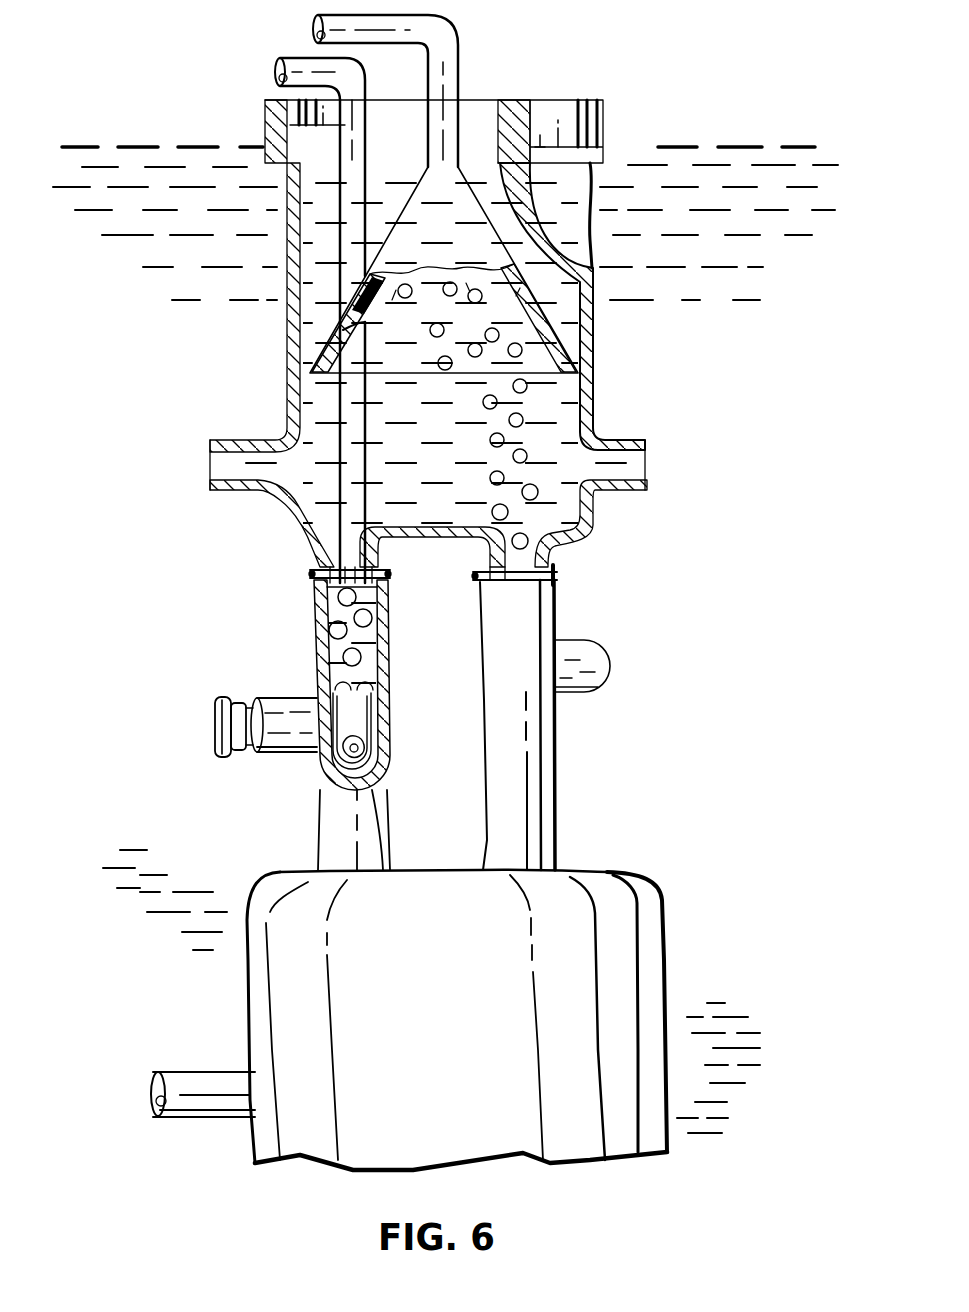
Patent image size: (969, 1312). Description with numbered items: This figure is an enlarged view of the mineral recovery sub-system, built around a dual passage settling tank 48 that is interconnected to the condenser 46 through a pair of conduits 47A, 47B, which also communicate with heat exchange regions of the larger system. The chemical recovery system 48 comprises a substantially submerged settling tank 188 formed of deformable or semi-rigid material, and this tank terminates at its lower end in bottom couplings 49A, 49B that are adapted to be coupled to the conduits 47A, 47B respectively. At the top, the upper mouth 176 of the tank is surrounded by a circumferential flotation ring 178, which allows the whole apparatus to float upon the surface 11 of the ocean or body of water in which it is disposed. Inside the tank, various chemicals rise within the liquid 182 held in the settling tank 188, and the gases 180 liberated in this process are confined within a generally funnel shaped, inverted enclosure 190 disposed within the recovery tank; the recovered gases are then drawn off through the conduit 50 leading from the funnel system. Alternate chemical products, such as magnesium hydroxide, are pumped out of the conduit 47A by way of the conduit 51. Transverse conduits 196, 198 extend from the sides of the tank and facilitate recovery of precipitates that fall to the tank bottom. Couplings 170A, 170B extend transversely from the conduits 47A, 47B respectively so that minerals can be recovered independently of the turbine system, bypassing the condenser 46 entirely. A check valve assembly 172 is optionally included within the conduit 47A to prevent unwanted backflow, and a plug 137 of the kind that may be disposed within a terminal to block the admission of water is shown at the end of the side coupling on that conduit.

The surface of the ocean or body of water 11 is at (607, 147).
The condenser 46 is at (665, 886).
The conduit 47A is at (387, 667).
The conduit 47B is at (543, 738).
The dual passage settling tank 48 is at (606, 340).
The lower bottom coupling 49A is at (314, 555).
The lower bottom coupling 49B is at (555, 553).
The conduit 50 is at (447, 43).
The conduit 51 is at (296, 66).
The plug 137 is at (221, 754).
The coupling 170A is at (285, 710).
The coupling 170B is at (580, 655).
The check valve assembly 172 is at (366, 723).
The upper mouth 176 is at (470, 97).
The circumferential flotation ring 178 is at (274, 133).
The gases 180 is at (500, 505).
The liquid 182 is at (370, 455).
The settling tank 188 is at (592, 372).
The funnel shaped inverted enclosure 190 is at (432, 198).
The transverse conduit 196 is at (609, 445).
The transverse conduit 198 is at (258, 480).